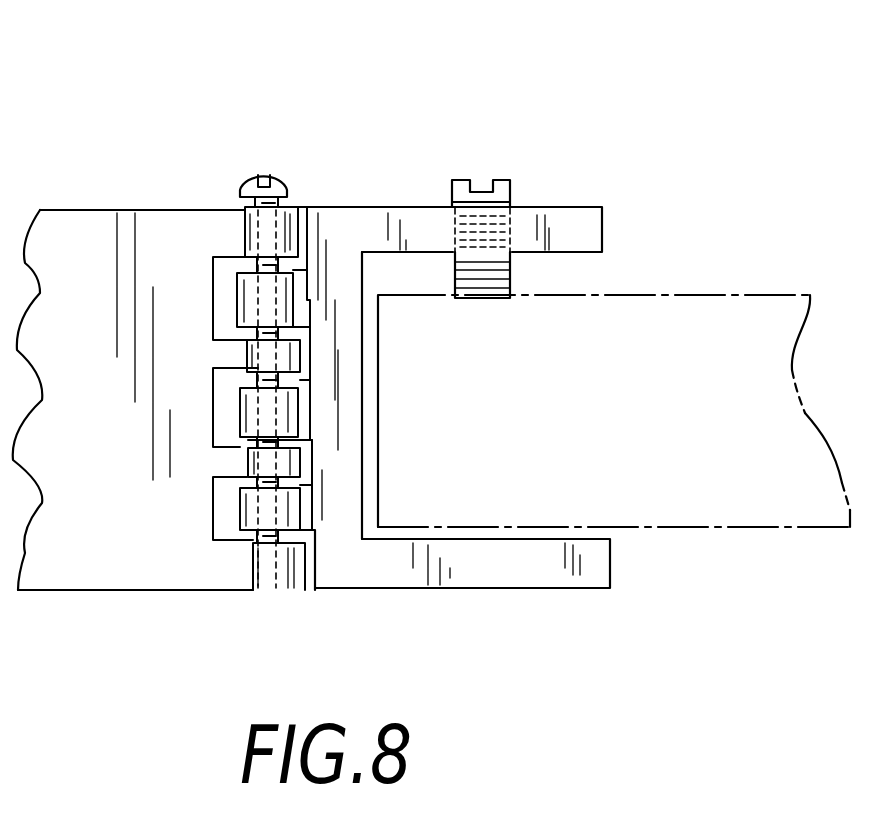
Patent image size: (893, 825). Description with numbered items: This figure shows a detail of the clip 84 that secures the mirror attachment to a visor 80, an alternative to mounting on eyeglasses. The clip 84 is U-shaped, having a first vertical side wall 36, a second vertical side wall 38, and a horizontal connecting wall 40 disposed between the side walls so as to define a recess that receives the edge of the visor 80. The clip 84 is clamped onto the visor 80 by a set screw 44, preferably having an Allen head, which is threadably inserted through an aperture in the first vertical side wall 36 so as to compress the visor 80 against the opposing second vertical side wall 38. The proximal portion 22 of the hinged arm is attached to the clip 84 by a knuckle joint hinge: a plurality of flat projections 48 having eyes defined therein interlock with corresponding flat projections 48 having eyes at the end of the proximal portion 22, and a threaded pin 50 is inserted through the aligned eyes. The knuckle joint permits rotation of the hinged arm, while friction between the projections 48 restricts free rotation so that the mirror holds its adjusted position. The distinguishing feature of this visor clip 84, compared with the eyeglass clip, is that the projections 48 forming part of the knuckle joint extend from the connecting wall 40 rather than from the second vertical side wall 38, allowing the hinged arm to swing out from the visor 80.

The proximal portion 22 is at (78, 208).
The first vertical side wall 36 is at (560, 206).
The second vertical side wall 38 is at (547, 588).
The horizontal connecting wall 40 is at (362, 508).
The set screw 44 is at (458, 178).
The flat projections 48 is at (222, 445).
The threaded pin 50 is at (283, 178).
The visor 80 is at (668, 294).
The clip 84 is at (501, 339).